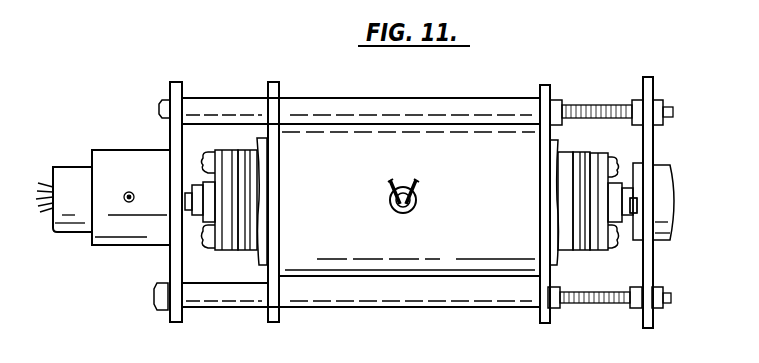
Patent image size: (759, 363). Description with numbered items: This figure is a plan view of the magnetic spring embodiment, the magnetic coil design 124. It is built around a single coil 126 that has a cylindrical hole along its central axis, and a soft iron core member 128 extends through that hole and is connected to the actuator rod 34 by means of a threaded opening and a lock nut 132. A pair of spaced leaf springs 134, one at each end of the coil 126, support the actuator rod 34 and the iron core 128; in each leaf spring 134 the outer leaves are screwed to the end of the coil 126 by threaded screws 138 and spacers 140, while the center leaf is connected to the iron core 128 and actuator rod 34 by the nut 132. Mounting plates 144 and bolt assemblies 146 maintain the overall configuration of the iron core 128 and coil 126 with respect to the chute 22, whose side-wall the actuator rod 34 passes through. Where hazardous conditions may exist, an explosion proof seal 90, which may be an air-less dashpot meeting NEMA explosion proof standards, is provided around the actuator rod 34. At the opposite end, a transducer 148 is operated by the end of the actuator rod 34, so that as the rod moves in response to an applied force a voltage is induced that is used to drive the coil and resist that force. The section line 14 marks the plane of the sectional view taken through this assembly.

The section line 14 is at (242, 135).
The chute 22 is at (653, 80).
The actuator rod 34 is at (633, 204).
The explosion proof seal 90 is at (676, 199).
The magnetic coil design 124 is at (582, 60).
The coil 126 is at (475, 143).
The soft iron core member 128 is at (232, 212).
The lock nut 132 is at (176, 216).
The leaf springs 134 is at (225, 196).
The threaded screws 138 is at (202, 157).
The spacers 140 is at (218, 155).
The mounting plates 144 is at (270, 316).
The bolt assemblies 146 is at (163, 300).
The transducer 148 is at (103, 247).